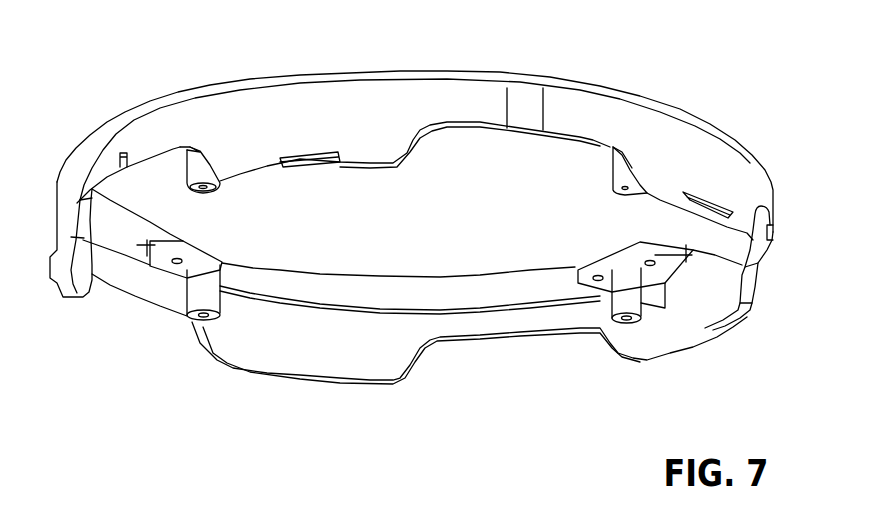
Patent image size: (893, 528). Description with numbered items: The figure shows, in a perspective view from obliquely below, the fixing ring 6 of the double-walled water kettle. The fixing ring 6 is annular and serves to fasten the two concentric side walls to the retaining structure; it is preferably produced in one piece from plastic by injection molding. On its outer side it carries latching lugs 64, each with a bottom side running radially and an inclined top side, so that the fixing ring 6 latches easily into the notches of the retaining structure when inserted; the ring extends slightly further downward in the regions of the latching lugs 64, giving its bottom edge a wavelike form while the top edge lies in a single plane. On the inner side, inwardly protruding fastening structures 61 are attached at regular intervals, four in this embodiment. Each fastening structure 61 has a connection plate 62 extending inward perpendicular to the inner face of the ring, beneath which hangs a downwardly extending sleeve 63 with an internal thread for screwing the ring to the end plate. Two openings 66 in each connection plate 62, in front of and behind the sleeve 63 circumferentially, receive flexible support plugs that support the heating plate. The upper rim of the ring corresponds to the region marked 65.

The fixing ring 6 is at (135, 88).
The fastening structure 61 is at (231, 308).
The connection plate 62 is at (215, 257).
The sleeve 63 is at (207, 297).
The latching lug 64 is at (302, 163).
The outer rim wall 65 is at (453, 75).
The opening 66 is at (598, 281).